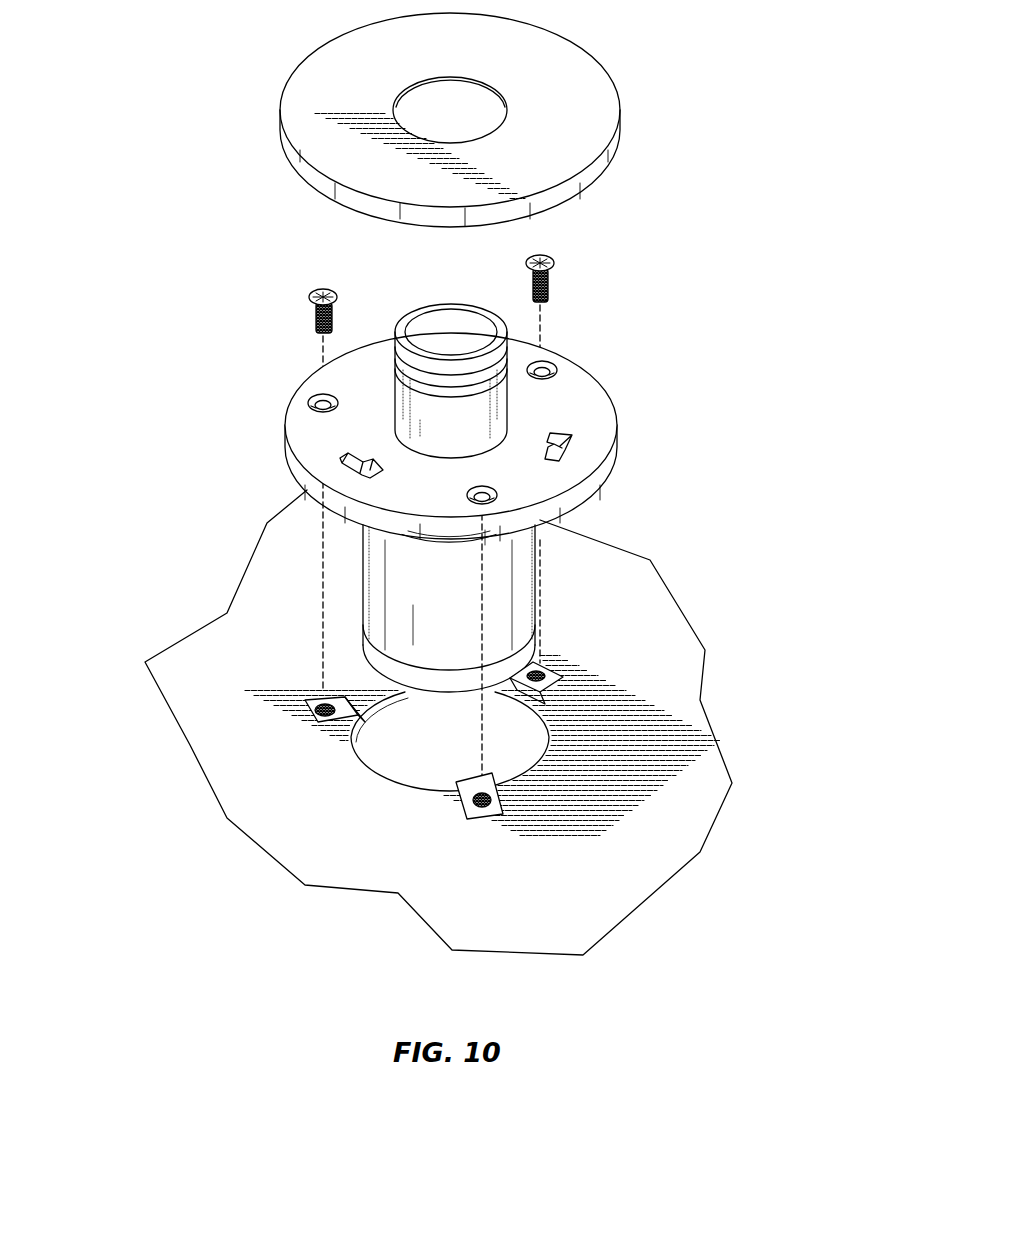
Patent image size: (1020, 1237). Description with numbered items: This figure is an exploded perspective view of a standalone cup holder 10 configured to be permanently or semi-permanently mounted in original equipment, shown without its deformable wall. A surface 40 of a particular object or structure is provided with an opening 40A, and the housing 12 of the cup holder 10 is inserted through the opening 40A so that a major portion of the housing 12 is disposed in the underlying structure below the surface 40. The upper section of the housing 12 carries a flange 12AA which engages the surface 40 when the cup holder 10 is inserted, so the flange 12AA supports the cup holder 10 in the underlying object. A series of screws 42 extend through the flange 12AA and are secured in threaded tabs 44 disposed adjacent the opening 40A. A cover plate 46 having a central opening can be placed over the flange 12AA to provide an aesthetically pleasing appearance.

The cup holder 10 is at (227, 503).
The housing 12 is at (501, 498).
The flange 12AA is at (590, 413).
The surface 40 is at (462, 722).
The opening 40A is at (397, 783).
The screws 42 is at (548, 282).
The threaded tabs 44 is at (545, 668).
The cover plate 46 is at (543, 75).